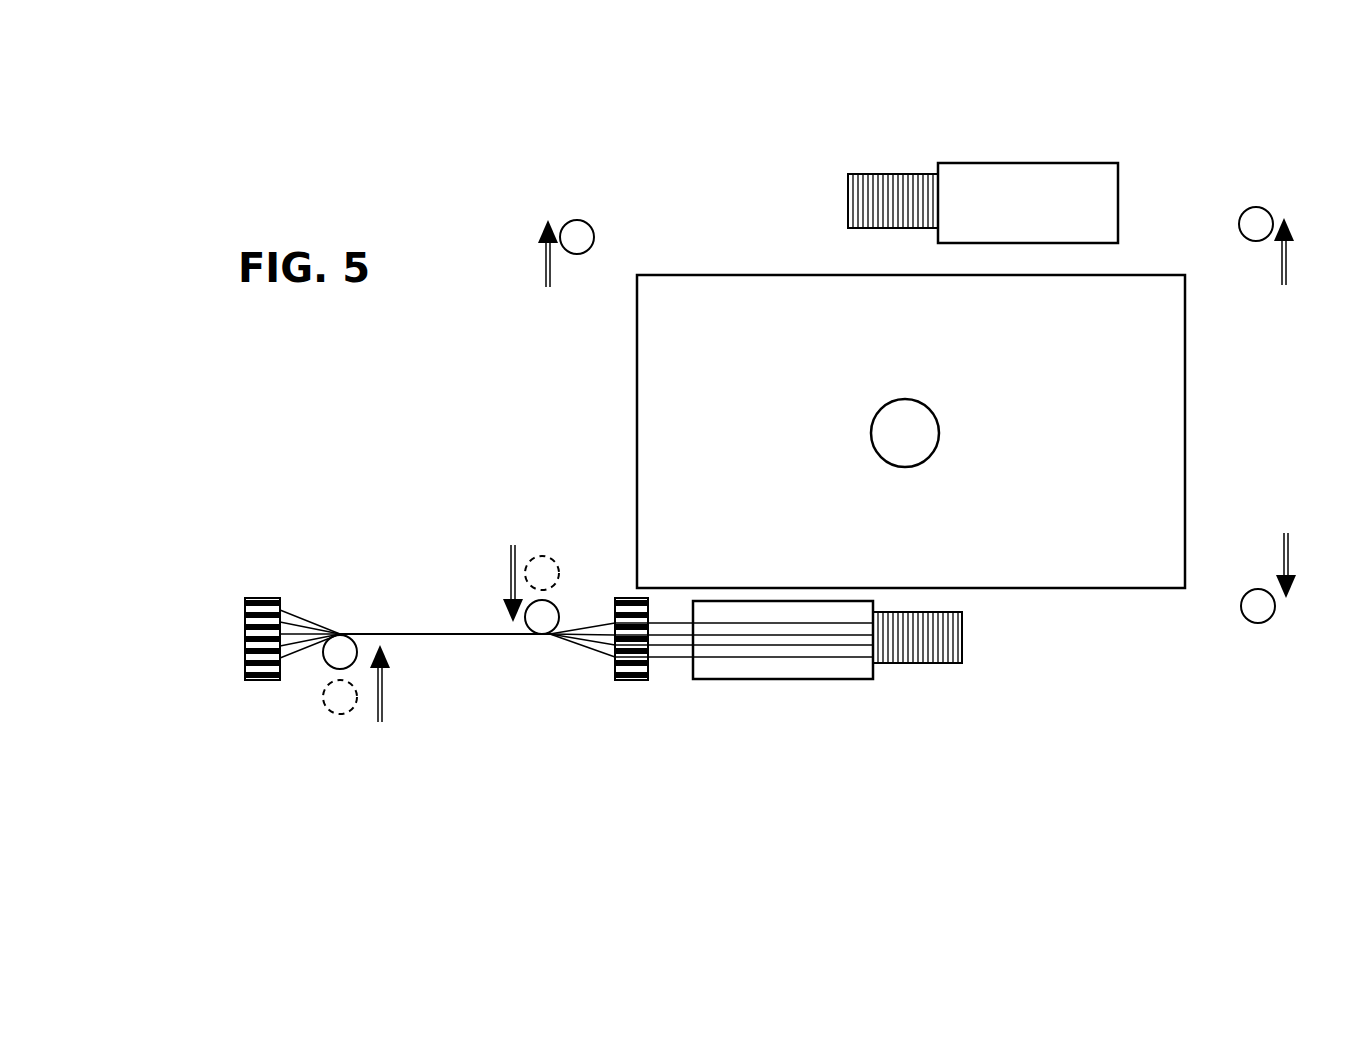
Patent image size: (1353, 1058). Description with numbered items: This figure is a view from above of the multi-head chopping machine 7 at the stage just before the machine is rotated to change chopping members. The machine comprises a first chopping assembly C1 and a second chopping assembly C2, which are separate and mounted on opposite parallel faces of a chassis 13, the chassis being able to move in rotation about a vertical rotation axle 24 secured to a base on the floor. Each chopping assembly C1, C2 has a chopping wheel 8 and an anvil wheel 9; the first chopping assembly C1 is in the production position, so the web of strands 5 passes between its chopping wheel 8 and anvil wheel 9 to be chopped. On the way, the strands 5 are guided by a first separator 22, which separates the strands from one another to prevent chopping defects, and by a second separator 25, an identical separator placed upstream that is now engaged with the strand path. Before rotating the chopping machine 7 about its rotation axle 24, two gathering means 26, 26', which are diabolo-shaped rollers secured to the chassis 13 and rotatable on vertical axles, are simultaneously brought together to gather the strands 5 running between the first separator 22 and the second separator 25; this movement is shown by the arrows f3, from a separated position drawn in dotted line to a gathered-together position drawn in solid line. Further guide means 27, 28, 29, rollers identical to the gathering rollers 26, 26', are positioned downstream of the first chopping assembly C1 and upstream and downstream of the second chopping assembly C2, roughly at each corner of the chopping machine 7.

The web of strands 5 is at (437, 637).
The chopping machine 7 is at (1197, 385).
The chopping wheel 8 is at (938, 647).
The anvil wheel 9 is at (785, 668).
The chassis 13 is at (700, 335).
The first separator 22 is at (627, 656).
The rotation axle 24 is at (912, 440).
The second separator 25 is at (252, 618).
The gathering means 26 is at (545, 686).
The gathering means 26' is at (347, 567).
The guide means 27 is at (1265, 617).
The guide means 28 is at (1262, 212).
The guide means 29 is at (582, 227).
The first chopping assembly C1 is at (733, 718).
The second chopping assembly C2 is at (1052, 152).
The arrows f3 is at (448, 639).